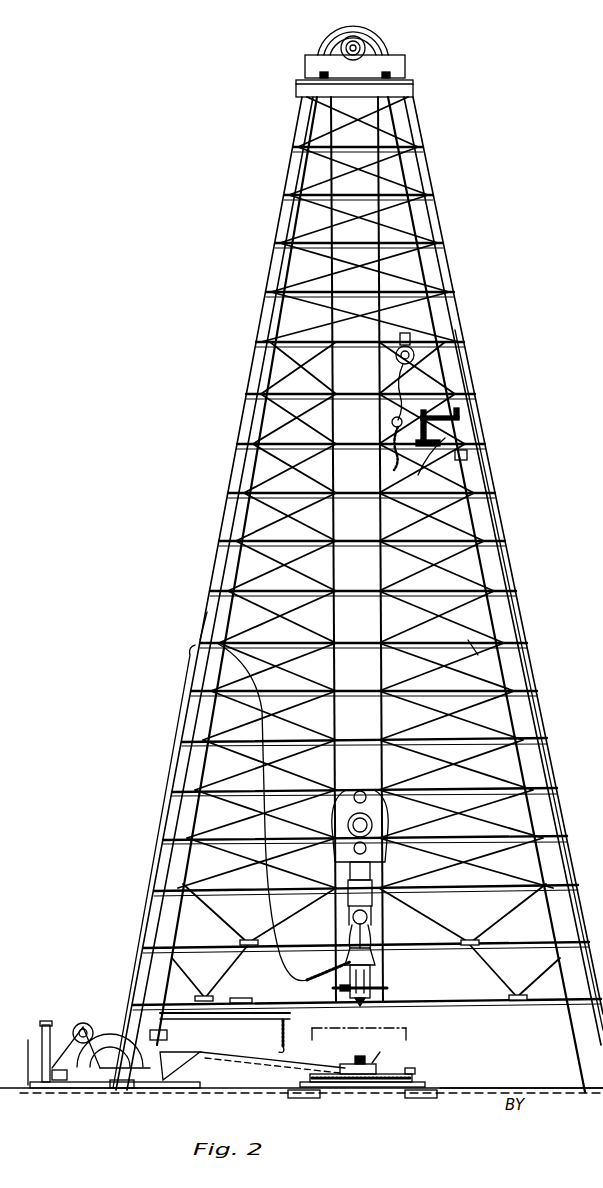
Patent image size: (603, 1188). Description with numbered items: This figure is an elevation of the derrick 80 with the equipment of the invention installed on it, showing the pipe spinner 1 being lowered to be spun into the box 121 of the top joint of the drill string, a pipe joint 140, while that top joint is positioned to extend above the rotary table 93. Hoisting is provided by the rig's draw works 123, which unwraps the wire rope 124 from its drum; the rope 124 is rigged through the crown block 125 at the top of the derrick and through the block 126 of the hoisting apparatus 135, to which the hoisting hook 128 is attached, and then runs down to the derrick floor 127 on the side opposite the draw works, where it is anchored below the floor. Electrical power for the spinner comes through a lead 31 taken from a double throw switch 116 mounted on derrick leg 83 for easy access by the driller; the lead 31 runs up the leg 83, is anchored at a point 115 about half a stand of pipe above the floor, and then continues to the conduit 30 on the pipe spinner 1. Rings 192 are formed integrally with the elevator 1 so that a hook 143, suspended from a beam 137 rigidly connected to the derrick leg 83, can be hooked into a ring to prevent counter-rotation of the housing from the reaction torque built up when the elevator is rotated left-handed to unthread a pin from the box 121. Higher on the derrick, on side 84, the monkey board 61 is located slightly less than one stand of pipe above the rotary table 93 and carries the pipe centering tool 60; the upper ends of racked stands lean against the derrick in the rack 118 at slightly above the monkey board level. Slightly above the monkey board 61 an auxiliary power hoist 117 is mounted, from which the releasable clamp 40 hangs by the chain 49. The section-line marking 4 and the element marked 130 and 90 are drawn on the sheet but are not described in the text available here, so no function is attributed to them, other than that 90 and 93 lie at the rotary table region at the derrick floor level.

The pipe spinner 1 is at (373, 986).
The section line 4- 4 is at (356, 1045).
The conduit 30 is at (369, 957).
The lead 31 is at (283, 931).
The releasable clamp 40 is at (390, 458).
The chain 49 is at (392, 418).
The pipe centering tool 60 is at (414, 447).
The monkey board 61 is at (429, 465).
The derrick 80 is at (506, 550).
The derrick leg 83 is at (208, 616).
The side of the derrick 84 is at (485, 442).
The rotary table 90 is at (386, 1070).
The rotary table 93 is at (412, 1074).
The anchor point 115 is at (220, 642).
The double throw switch 116 is at (124, 1016).
The auxiliary power hoist 117 is at (400, 386).
The rack 118 is at (468, 456).
The box 121 is at (362, 1058).
The draw works 123 is at (70, 1025).
The wire rope 124 is at (472, 642).
The crown block 125 is at (376, 50).
The block 126 is at (371, 790).
The derrick floor 127 is at (508, 1070).
The hoisting hook 128 is at (373, 908).
The hook 130 is at (348, 950).
The hoisting apparatus 135 is at (348, 910).
The beam 137 is at (240, 1000).
The pipe joint 140 is at (355, 1064).
The hook 143 is at (278, 1048).
The rings 192 is at (342, 990).